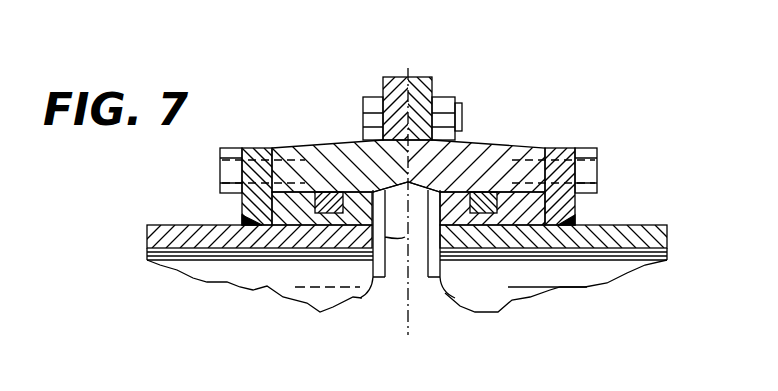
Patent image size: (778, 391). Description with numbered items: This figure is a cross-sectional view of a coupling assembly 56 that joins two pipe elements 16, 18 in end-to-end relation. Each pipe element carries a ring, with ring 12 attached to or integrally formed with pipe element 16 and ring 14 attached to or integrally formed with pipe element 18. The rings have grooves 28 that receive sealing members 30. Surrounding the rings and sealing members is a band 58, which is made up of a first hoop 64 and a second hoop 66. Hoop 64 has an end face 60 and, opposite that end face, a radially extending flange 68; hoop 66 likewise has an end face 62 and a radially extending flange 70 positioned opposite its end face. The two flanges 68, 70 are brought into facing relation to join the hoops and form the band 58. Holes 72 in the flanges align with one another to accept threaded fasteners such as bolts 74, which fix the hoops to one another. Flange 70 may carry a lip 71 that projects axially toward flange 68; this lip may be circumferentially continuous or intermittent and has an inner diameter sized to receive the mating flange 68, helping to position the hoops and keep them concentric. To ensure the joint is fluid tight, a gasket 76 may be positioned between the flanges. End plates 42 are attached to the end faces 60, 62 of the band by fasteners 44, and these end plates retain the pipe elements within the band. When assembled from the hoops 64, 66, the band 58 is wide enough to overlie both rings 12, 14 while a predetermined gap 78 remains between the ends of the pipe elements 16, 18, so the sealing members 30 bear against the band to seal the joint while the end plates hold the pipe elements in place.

The ring 12 is at (300, 228).
The ring 14 is at (557, 250).
The pipe element 16 is at (150, 240).
The pipe element 18 is at (633, 250).
The groove 28 is at (510, 215).
The sealing member 30 is at (475, 200).
The end plate 42 is at (253, 152).
The fastener 44 is at (600, 170).
The coupling assembly 56 is at (627, 123).
The band 58 is at (352, 147).
The end face 60 is at (285, 155).
The end face 62 is at (531, 157).
The first hoop 64 is at (320, 150).
The second hoop 66 is at (470, 155).
The radially extending flange 68 is at (400, 77).
The radially extending flange 70 is at (430, 78).
The lip 71 is at (414, 78).
The hole 72 is at (458, 100).
The bolt 74 is at (356, 147).
The gasket 76 is at (398, 78).
The gap 78 is at (420, 247).